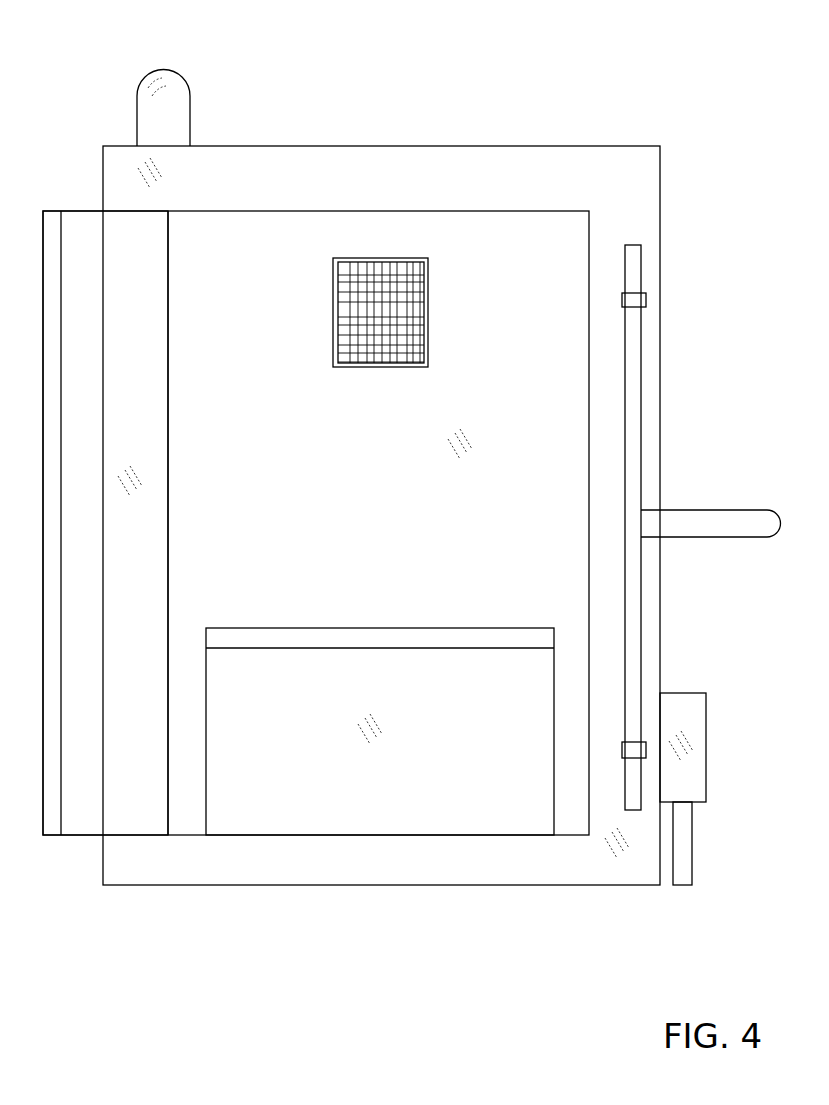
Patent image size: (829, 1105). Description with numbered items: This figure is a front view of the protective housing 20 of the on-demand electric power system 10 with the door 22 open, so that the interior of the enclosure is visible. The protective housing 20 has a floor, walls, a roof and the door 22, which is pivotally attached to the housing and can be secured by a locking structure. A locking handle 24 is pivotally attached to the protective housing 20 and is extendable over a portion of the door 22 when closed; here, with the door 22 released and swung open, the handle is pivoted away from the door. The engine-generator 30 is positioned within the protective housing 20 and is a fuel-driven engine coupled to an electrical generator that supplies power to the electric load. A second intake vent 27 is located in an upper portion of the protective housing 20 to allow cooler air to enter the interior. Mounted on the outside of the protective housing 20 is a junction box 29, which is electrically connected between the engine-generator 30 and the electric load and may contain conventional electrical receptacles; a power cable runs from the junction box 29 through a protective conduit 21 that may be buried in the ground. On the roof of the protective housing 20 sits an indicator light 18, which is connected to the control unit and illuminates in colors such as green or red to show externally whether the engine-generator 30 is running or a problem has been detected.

The on-demand electric power system 10 is at (620, 62).
The indicator light 18 is at (181, 74).
The protective housing 20 is at (310, 146).
The protective conduit 21 is at (692, 855).
The door 22 is at (84, 806).
The locking handle 24 is at (697, 510).
The second intake vent 27 is at (390, 278).
The junction box 29 is at (683, 693).
The engine-generator 30 is at (304, 773).